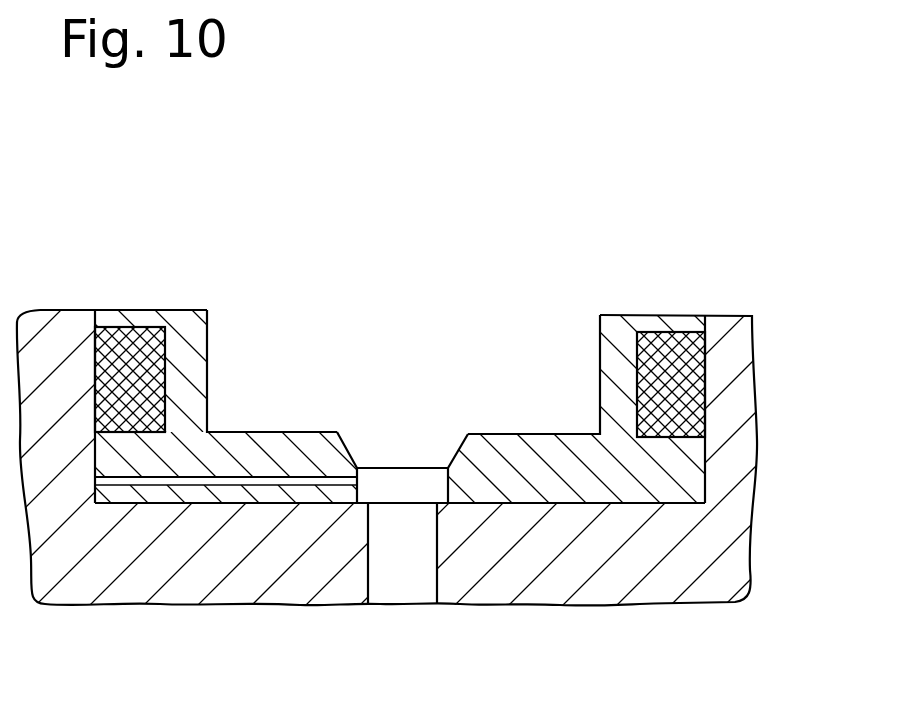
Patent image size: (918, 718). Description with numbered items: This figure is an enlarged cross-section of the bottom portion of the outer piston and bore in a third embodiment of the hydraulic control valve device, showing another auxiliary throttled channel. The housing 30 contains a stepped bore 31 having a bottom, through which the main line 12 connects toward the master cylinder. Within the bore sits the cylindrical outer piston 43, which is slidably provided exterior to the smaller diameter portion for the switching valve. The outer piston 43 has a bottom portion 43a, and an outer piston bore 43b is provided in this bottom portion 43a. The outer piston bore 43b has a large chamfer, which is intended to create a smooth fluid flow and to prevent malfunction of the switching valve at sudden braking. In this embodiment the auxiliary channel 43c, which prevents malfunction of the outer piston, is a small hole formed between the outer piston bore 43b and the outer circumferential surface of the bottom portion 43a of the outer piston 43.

The main line 12 is at (413, 592).
The housing 30 is at (738, 372).
The stepped bore 31 is at (702, 462).
The outer piston 43 is at (610, 343).
The bottom portion 43a is at (270, 442).
The outer piston bore 43b is at (407, 478).
The auxiliary channel 43c is at (222, 486).